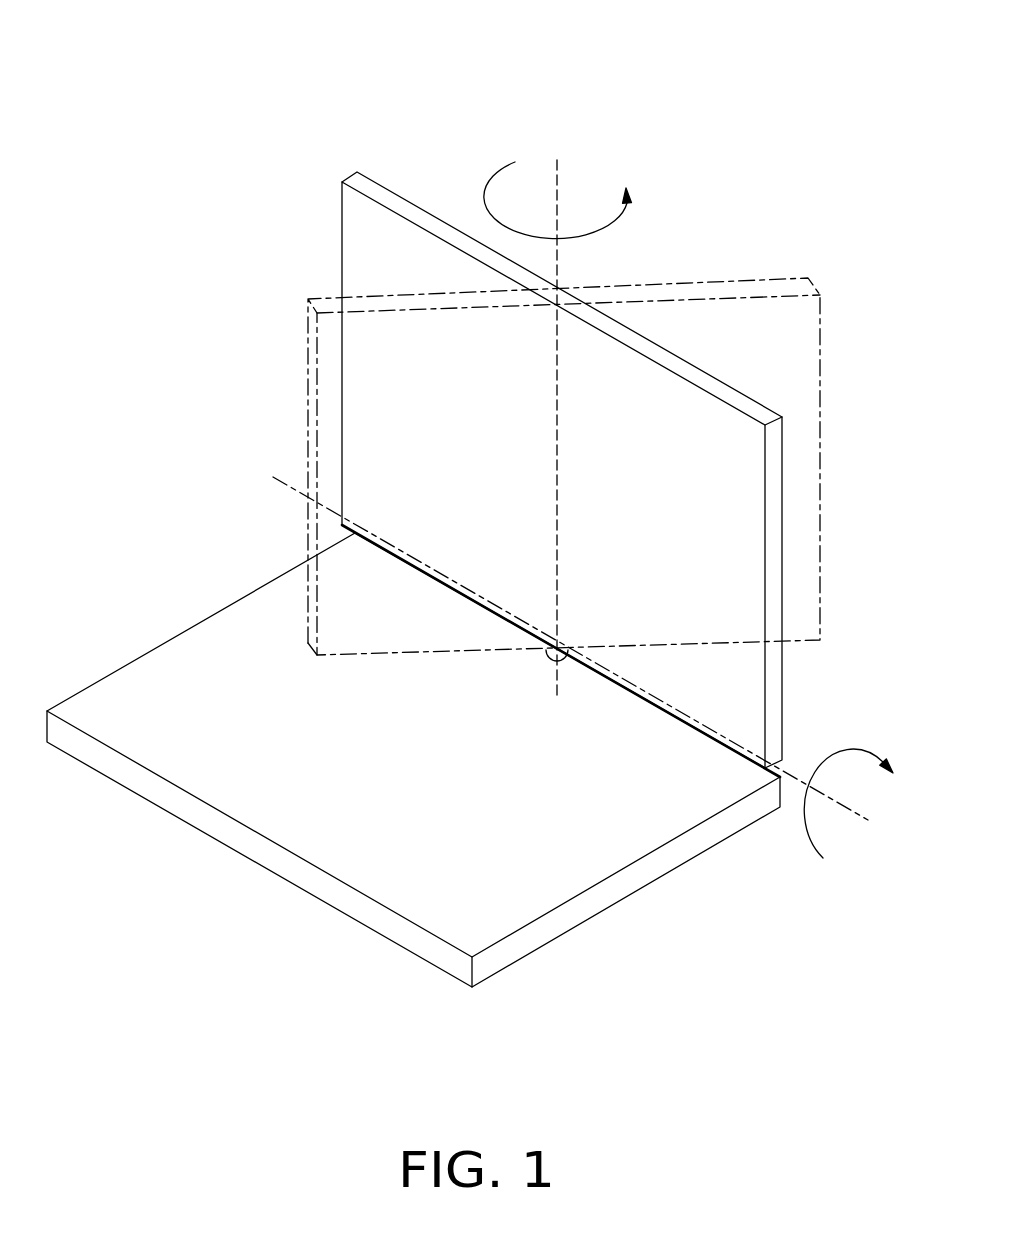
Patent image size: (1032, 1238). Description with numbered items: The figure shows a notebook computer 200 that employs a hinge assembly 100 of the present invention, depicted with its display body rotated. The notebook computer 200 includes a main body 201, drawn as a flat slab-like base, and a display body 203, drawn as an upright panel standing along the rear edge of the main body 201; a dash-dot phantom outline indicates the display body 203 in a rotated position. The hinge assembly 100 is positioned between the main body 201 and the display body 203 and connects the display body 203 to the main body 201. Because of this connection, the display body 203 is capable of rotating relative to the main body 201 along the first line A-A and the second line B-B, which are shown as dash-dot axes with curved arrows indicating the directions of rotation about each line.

The notebook computer 200 is at (481, 498).
The display body 203 is at (377, 258).
The main body 201 is at (215, 675).
The hinge assembly 100 is at (547, 658).